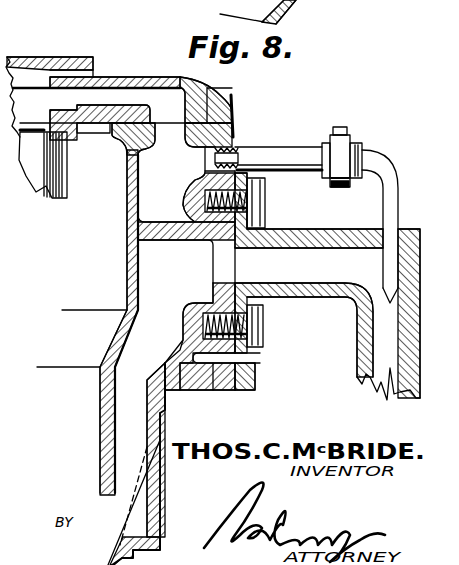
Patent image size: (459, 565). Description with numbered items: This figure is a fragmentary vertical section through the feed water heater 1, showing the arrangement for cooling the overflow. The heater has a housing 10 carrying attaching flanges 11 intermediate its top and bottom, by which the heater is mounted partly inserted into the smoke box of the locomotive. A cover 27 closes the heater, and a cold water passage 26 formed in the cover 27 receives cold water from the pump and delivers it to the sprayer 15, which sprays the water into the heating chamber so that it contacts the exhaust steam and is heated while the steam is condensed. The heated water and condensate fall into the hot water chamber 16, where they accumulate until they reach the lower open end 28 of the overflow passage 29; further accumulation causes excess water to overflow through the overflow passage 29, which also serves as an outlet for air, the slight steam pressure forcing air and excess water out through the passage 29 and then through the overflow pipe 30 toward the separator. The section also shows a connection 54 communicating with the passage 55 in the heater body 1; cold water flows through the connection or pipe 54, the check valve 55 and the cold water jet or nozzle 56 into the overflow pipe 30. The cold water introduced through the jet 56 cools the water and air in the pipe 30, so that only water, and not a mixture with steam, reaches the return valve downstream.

The feed water heater 1 is at (124, 210).
The housing 10 is at (160, 425).
The attaching flanges 11 is at (255, 376).
The sprayer 15 is at (63, 165).
The hot water chamber 16 is at (70, 412).
The cold water passage 26 is at (117, 93).
The cover 27 is at (150, 77).
The lower open end 28 is at (120, 520).
The overflow passage 29 is at (158, 275).
The overflow pipe 30 is at (312, 297).
The connection 54 is at (273, 155).
The check valve 55 is at (345, 143).
The cold water jet 56 is at (388, 201).